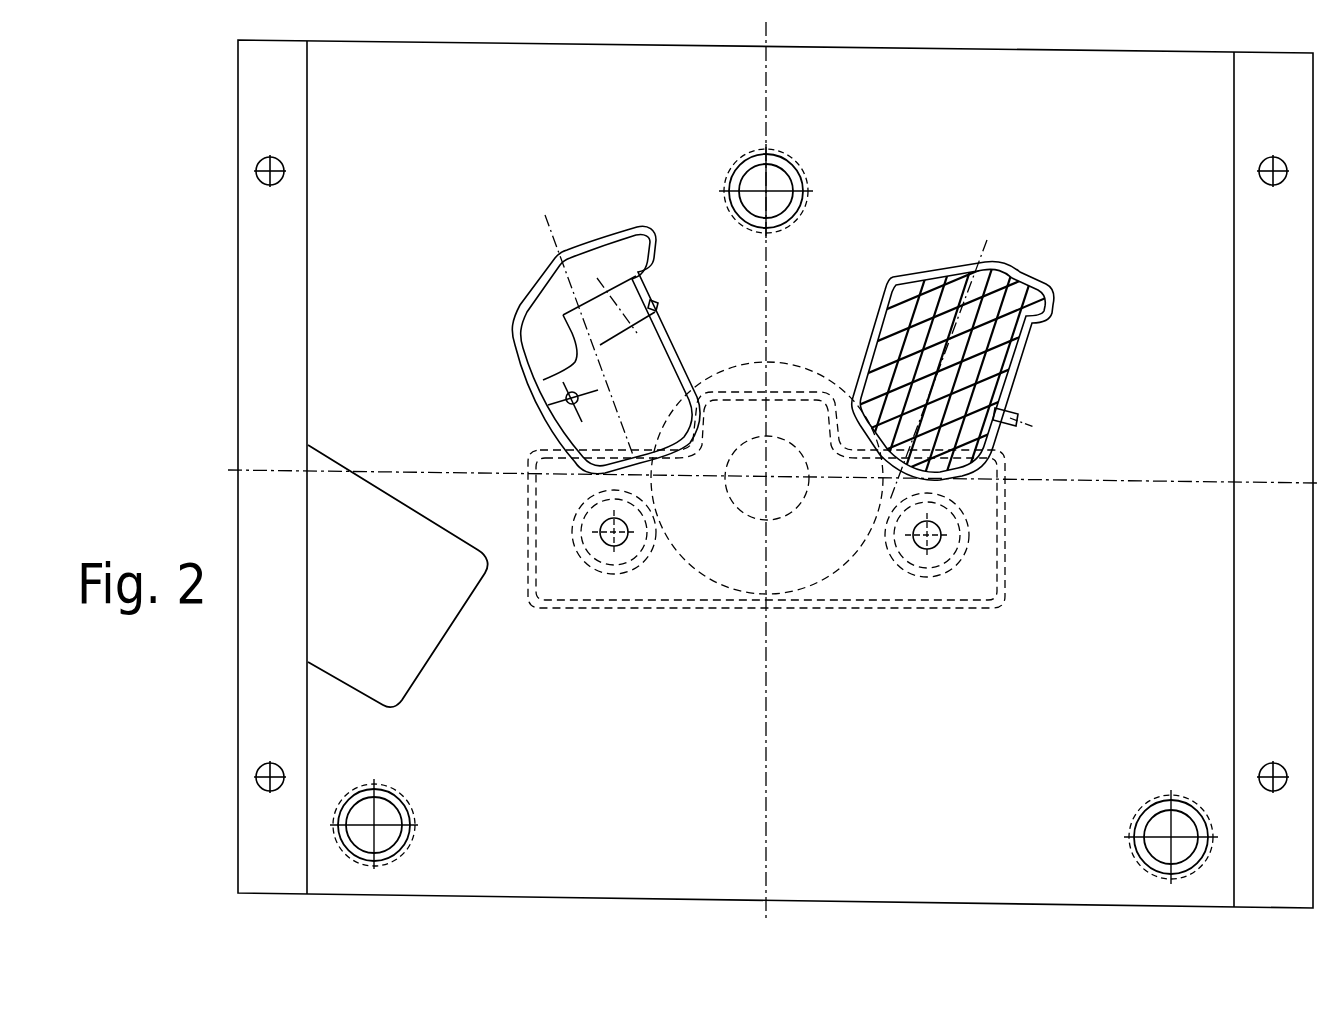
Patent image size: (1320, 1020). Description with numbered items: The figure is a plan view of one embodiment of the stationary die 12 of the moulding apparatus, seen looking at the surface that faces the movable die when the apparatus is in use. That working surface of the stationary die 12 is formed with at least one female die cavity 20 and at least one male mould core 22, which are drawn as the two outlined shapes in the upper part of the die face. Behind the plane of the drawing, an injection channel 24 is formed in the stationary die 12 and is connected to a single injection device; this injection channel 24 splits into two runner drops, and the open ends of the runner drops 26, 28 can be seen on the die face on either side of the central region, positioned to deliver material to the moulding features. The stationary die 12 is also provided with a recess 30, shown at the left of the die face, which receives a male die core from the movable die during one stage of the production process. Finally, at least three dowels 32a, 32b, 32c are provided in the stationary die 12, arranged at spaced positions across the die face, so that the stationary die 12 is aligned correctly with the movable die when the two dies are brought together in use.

The stationary die 12 is at (194, 245).
The female die cavity 20 is at (589, 230).
The male mould core 22 is at (1022, 270).
The injection channel 24 is at (782, 522).
The runner drop 26 is at (603, 538).
The runner drop 28 is at (933, 547).
The recess 30 is at (438, 657).
The dowel 32a is at (780, 178).
The dowel 32b is at (387, 815).
The dowel 32c is at (1178, 817).